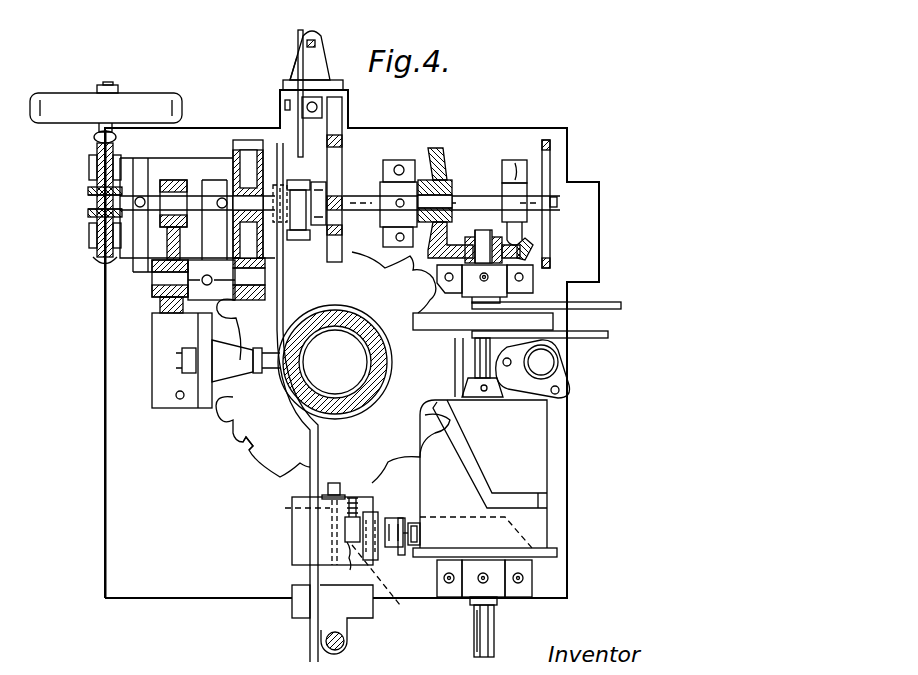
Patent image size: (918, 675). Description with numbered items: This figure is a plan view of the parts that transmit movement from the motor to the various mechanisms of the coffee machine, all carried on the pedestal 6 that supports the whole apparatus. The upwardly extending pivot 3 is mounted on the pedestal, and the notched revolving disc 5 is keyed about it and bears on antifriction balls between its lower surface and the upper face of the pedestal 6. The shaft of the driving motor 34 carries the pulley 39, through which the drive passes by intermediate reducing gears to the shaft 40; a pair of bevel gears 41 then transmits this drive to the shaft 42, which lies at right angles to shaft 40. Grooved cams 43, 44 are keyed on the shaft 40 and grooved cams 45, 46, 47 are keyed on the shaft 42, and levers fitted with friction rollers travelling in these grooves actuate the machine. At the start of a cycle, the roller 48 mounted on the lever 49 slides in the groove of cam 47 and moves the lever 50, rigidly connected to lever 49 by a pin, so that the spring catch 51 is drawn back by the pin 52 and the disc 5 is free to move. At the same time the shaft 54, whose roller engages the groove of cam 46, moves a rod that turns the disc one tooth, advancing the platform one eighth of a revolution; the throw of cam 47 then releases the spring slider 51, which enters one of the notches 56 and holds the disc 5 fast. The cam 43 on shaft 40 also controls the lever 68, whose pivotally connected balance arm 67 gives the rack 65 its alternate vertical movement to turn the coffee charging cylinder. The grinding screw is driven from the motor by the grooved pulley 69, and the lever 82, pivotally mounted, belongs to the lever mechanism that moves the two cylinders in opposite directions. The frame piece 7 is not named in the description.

The pivot 3 is at (335, 362).
The notched revolving disc 5 is at (333, 367).
The pedestal 6 is at (150, 363).
The frame 7 is at (603, 232).
The shaft of the driving motor 34 is at (111, 86).
The pulley 39 is at (64, 100).
The shaft 40 is at (358, 197).
The bevel gears 41 is at (446, 165).
The shaft 42 is at (475, 355).
The cam 43 is at (290, 180).
The cam 44 is at (340, 160).
The cam 45 is at (418, 316).
The cam 46 is at (483, 474).
The cam 47 is at (433, 554).
The roller 48 is at (420, 534).
The lever 49 is at (401, 518).
The lever 50 is at (352, 500).
The spring catch 51 is at (338, 483).
The pin 52 is at (292, 508).
The shaft 54 is at (480, 627).
The notches 56 is at (245, 446).
The rack 65 is at (320, 42).
The balance arm 67 is at (297, 44).
The lever 68 is at (283, 290).
The grooved pulley 69 is at (607, 304).
The lever 82 is at (594, 338).